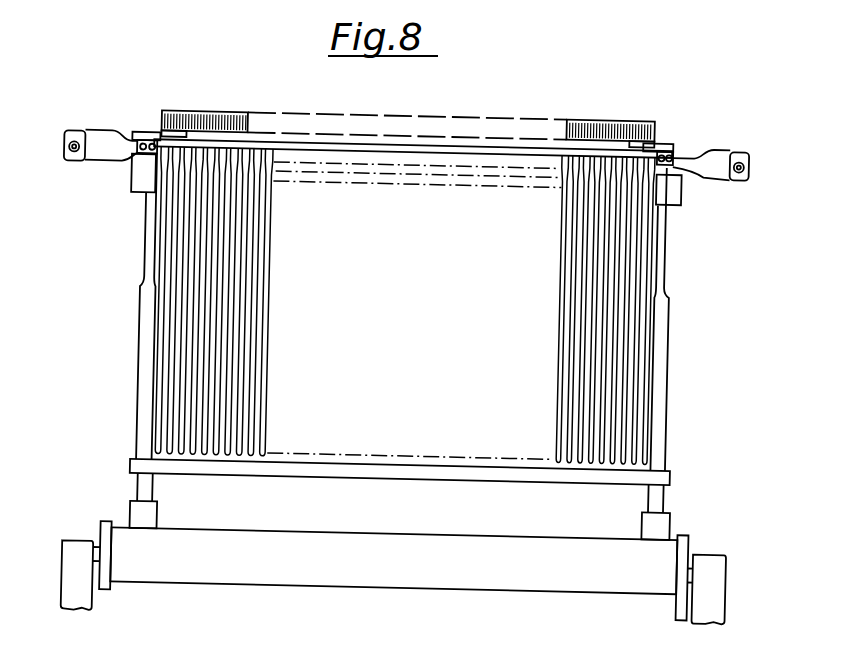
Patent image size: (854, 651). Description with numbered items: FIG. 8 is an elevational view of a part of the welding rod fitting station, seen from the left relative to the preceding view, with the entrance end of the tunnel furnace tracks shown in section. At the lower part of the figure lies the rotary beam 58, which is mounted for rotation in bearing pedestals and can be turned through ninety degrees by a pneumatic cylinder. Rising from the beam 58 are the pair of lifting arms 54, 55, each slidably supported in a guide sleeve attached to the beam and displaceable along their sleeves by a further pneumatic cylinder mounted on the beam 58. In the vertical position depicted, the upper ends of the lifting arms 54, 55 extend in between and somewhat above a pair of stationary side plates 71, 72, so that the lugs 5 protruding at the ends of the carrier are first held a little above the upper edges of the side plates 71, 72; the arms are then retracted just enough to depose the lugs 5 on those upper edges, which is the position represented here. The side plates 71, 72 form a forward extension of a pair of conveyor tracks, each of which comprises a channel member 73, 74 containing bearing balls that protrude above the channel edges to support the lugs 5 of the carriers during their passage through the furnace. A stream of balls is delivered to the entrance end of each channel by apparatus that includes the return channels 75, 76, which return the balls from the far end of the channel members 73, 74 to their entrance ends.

The lugs 5 is at (138, 134).
The lifting arm 54 is at (658, 328).
The lifting arm 55 is at (147, 323).
The beam 58 is at (503, 583).
The side plate 71 is at (672, 183).
The side plate 72 is at (136, 177).
The channel member 73 is at (668, 148).
The channel member 74 is at (131, 138).
The return channel 75 is at (729, 138).
The return channel 76 is at (80, 131).